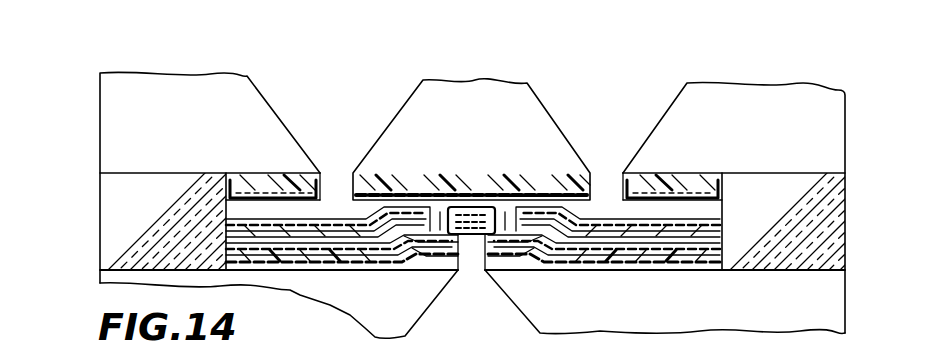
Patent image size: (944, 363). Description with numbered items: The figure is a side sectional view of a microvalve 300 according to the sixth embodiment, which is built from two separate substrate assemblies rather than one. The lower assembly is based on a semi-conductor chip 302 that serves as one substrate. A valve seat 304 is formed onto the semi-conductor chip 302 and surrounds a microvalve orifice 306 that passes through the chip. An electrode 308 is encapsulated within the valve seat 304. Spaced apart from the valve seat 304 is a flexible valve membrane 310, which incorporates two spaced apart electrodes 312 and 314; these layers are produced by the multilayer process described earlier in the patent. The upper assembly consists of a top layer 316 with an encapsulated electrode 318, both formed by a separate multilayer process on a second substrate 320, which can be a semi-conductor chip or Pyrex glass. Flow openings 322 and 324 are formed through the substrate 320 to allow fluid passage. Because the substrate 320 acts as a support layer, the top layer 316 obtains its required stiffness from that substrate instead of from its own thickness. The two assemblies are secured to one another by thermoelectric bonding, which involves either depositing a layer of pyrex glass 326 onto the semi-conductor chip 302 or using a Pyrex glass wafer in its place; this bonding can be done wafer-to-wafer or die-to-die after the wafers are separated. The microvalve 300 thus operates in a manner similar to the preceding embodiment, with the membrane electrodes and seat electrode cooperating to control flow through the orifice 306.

The microvalve 300 is at (802, 80).
The semi-conductor chip 302 is at (118, 281).
The valve seat 304 is at (418, 262).
The microvalve orifice 306 is at (472, 258).
The electrode 308 is at (536, 262).
The flexible valve membrane 310 is at (357, 264).
The electrode 312 is at (676, 268).
The electrode 314 is at (262, 230).
The top layer 316 is at (398, 178).
The encapsulated electrode 318 is at (527, 194).
The substrate 320 is at (118, 115).
The flow opening 322 is at (326, 176).
The flow opening 324 is at (622, 178).
The layer of pyrex glass 326 is at (118, 230).